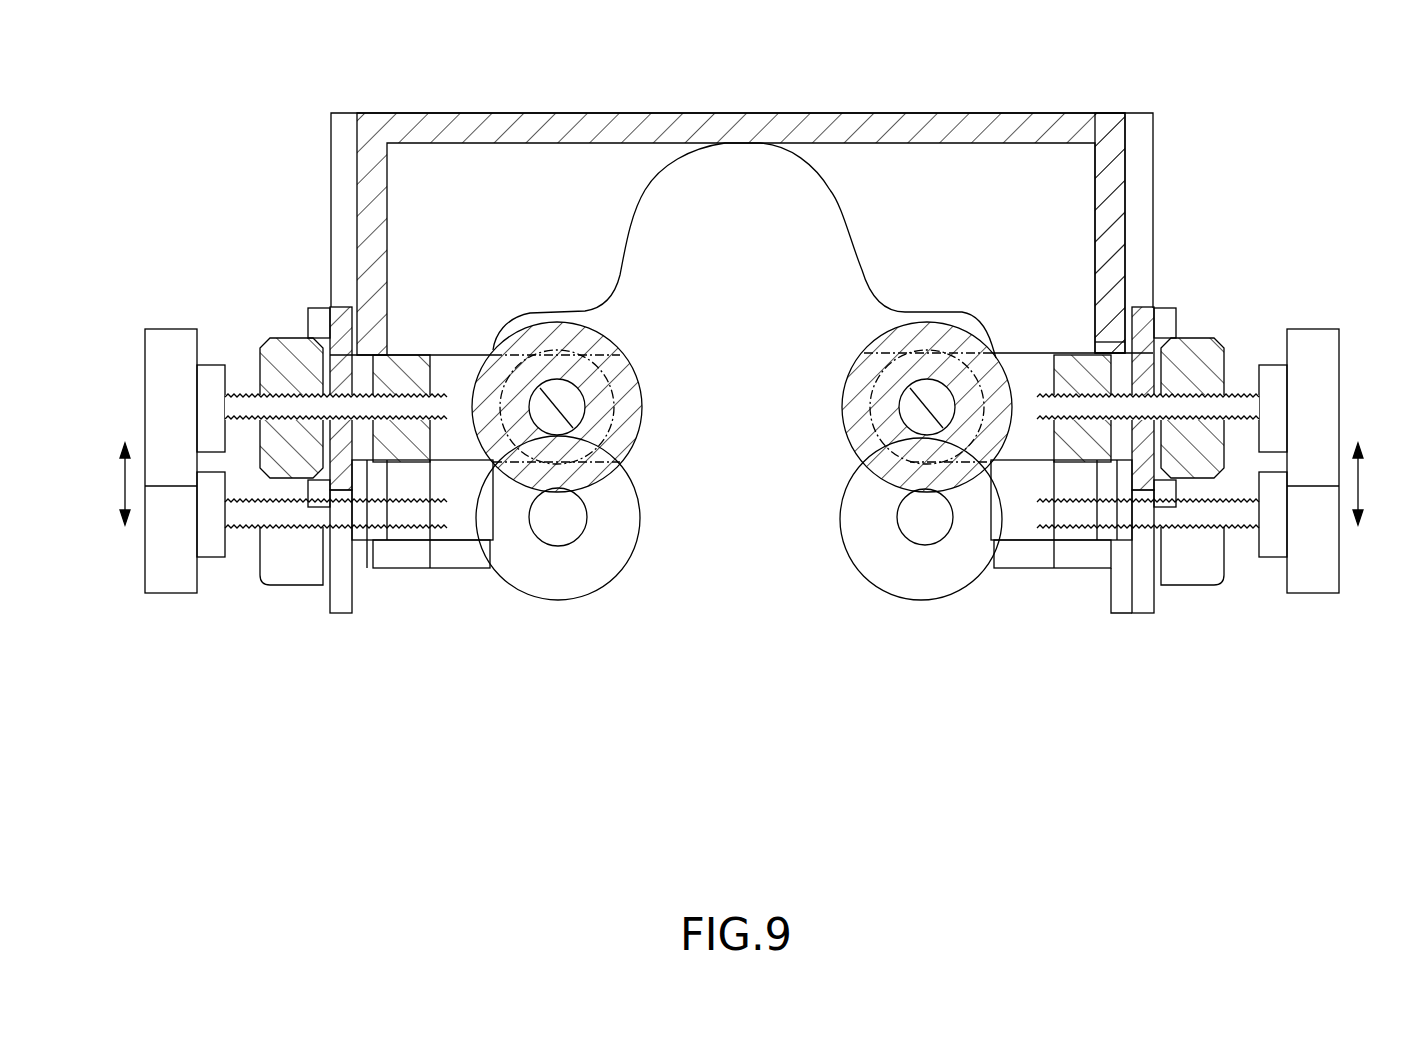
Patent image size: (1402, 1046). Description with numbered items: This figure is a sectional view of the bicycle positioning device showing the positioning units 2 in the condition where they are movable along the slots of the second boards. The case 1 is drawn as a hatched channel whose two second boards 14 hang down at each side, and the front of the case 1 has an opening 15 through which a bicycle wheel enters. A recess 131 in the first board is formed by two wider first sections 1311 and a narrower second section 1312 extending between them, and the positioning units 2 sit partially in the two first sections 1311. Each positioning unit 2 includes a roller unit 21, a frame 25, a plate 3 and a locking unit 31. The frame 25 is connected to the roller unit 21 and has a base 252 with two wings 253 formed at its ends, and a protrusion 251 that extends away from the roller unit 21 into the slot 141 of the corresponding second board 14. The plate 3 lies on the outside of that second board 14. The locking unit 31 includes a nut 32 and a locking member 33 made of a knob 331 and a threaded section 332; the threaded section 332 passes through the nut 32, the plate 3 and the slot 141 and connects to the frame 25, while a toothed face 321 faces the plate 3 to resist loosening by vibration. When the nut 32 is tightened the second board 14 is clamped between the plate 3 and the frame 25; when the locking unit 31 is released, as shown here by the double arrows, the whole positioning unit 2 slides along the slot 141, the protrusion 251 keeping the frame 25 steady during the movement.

The case 1 is at (1185, 121).
The second board 14 is at (1127, 228).
The slot 141 is at (1097, 347).
The recess 131 is at (744, 323).
The first section 1311 is at (990, 487).
The second section 1312 is at (833, 195).
The opening 15 is at (1000, 542).
The positioning unit 2 is at (1212, 626).
The roller unit 21 is at (650, 455).
The frame 25 is at (1011, 348).
The protrusion 251 is at (363, 458).
The base 252 is at (405, 452).
The wing 253 is at (460, 452).
The plate 3 is at (1168, 330).
The locking unit 31 is at (1293, 286).
The nut 32 is at (1227, 457).
The toothed face 321 is at (1160, 340).
The locking member 33 is at (233, 267).
The knob 331 is at (163, 337).
The threaded section 332 is at (260, 348).